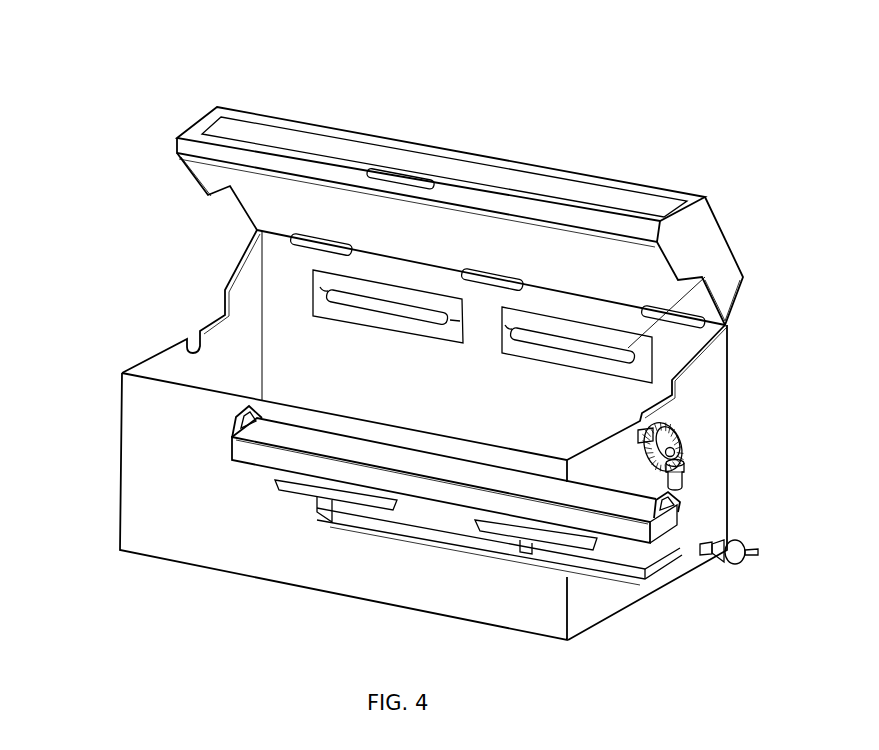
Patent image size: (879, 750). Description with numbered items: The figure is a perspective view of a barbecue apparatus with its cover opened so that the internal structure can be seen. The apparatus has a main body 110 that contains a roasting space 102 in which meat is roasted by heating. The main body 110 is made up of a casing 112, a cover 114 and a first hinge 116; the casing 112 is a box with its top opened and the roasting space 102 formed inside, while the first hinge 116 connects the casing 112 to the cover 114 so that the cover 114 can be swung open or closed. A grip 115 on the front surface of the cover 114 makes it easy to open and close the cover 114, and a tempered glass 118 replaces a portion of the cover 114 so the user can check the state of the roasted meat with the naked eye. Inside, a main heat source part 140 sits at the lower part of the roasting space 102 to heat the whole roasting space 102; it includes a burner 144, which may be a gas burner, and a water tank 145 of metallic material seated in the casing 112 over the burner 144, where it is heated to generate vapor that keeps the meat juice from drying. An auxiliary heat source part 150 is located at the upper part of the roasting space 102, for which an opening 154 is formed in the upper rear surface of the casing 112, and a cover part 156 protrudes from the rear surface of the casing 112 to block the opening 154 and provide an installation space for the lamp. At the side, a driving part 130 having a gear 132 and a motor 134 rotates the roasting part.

The main body 110 is at (497, 138).
The cover 114 is at (197, 117).
The tempered glass 118 is at (282, 136).
The grip 115 is at (383, 160).
The first hinge 116 is at (316, 250).
The casing 112 is at (135, 418).
The roasting space 102 is at (296, 344).
The auxiliary heat source part 150 is at (605, 324).
The opening 154 is at (643, 361).
The cover part 156 is at (643, 308).
The main heat source part 140 is at (201, 485).
The burner 144 is at (277, 482).
The water tank 145 is at (442, 492).
The driving part 130 is at (689, 430).
The gear 132 is at (673, 424).
The motor 134 is at (683, 464).